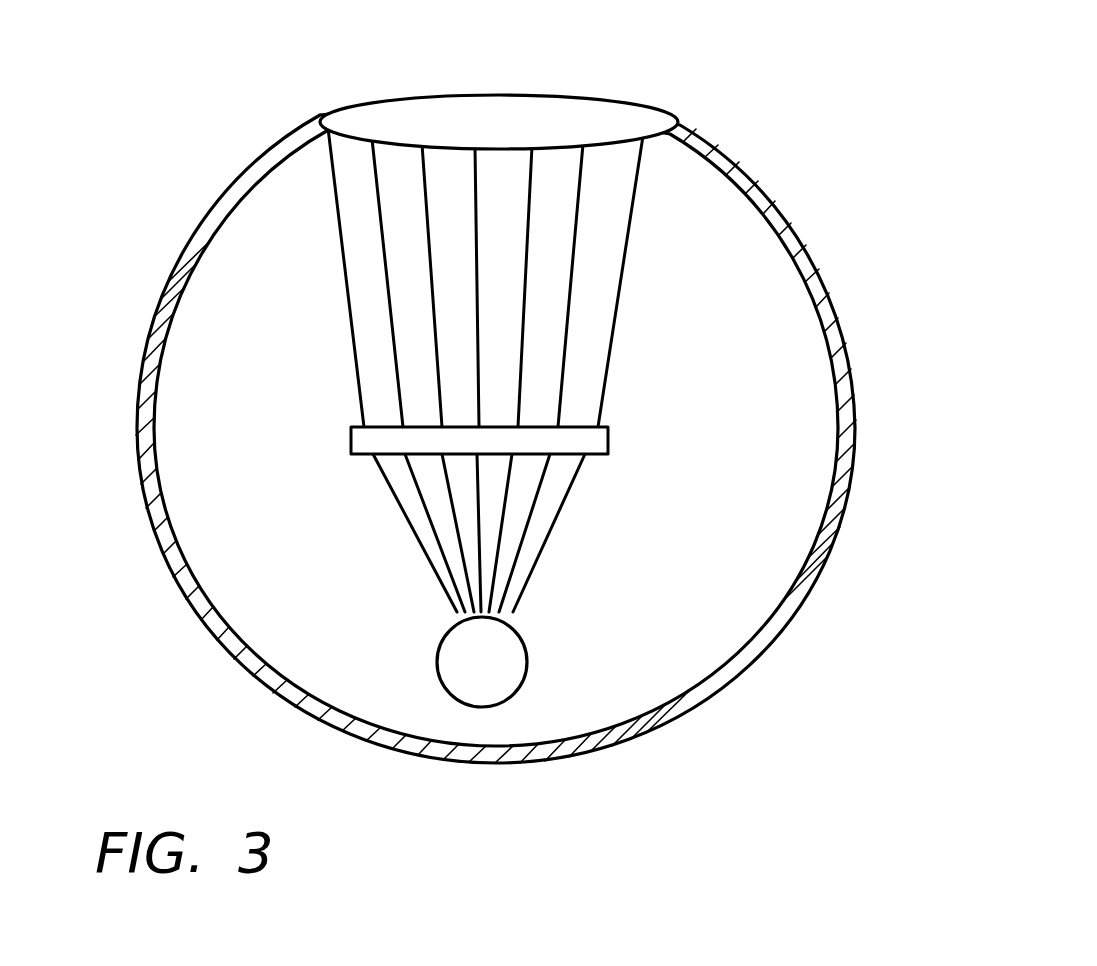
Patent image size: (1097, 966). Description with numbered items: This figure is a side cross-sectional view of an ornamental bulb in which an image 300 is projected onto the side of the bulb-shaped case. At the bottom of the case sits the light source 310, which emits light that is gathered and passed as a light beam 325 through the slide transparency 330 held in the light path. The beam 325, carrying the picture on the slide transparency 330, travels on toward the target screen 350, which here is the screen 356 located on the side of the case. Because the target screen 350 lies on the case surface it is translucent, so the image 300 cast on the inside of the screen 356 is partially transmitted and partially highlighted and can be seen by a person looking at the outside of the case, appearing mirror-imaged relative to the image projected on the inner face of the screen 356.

The image 300 is at (501, 108).
The target screen 350 is at (496, 385).
The screen 356 is at (608, 100).
The light beam 325 is at (622, 283).
The slide transparency 330 is at (610, 437).
The light source 310 is at (527, 668).